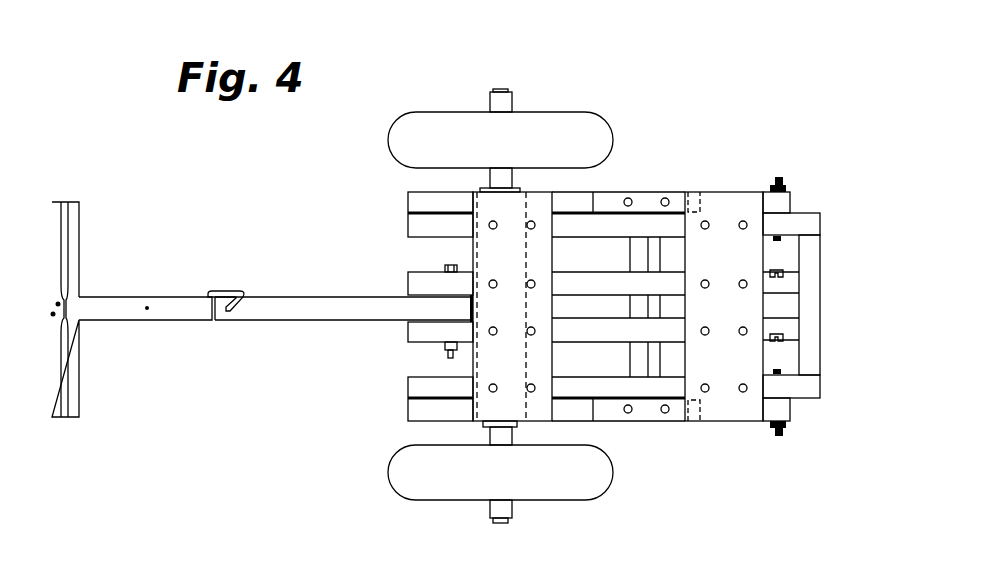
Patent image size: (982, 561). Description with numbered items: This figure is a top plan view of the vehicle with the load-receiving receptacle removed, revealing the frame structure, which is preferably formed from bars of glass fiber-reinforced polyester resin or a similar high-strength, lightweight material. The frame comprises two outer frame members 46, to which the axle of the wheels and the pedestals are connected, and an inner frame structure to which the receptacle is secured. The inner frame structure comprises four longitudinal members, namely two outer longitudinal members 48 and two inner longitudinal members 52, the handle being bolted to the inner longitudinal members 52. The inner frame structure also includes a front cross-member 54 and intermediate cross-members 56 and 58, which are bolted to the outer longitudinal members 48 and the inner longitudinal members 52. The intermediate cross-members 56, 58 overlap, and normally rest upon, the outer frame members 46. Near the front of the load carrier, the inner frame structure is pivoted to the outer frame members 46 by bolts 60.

The outer frame members 46 is at (788, 202).
The outer longitudinal members 48 is at (817, 225).
The inner longitudinal members 52 is at (415, 283).
The front cross-member 54 is at (815, 300).
The intermediate cross-member 56 is at (545, 203).
The intermediate cross-member 58 is at (712, 206).
The bolts 60 is at (780, 180).